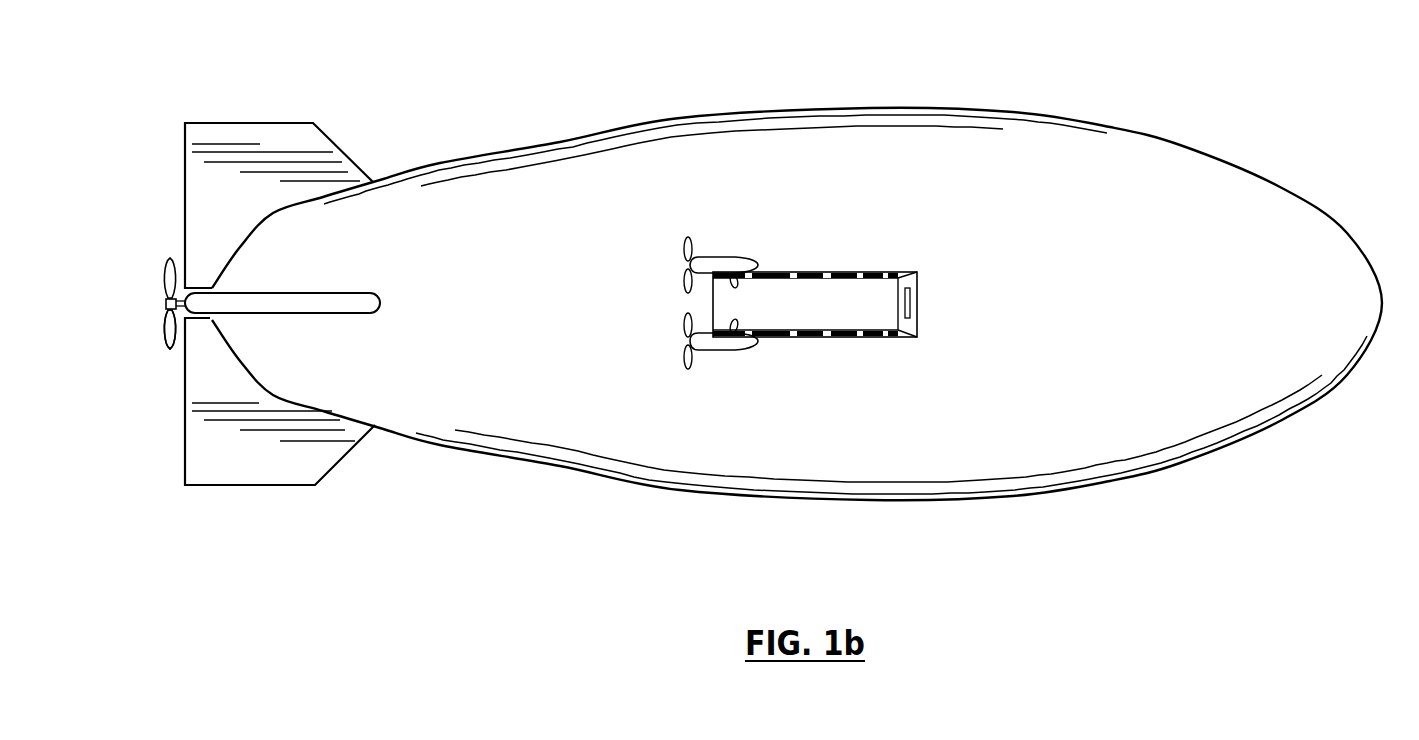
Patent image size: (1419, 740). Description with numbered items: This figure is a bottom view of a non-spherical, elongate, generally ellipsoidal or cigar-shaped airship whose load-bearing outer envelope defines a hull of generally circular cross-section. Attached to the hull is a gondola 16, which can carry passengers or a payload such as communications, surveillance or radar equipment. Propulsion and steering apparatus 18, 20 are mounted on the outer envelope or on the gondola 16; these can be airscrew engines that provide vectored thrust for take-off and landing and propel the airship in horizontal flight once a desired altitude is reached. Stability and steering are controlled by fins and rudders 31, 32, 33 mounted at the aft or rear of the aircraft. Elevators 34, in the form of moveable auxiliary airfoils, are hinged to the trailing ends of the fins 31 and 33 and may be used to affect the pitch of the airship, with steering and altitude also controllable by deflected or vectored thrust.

The gondola 16 is at (880, 322).
The propulsion and steering apparatus 18 is at (720, 258).
The propulsion and steering apparatus 20 is at (163, 272).
The fin 31 is at (250, 488).
The fin and rudder 32 is at (323, 313).
The fin 33 is at (352, 170).
The elevator 34 is at (170, 350).